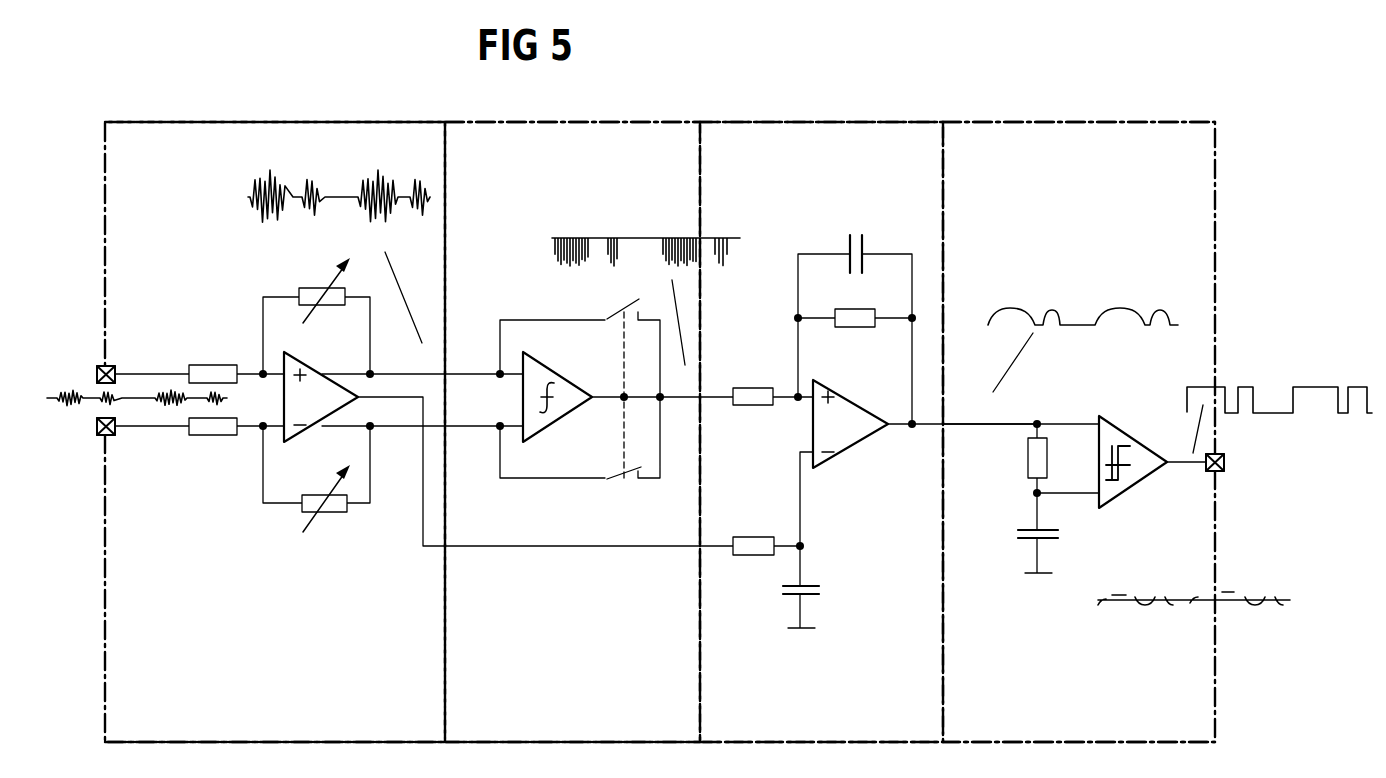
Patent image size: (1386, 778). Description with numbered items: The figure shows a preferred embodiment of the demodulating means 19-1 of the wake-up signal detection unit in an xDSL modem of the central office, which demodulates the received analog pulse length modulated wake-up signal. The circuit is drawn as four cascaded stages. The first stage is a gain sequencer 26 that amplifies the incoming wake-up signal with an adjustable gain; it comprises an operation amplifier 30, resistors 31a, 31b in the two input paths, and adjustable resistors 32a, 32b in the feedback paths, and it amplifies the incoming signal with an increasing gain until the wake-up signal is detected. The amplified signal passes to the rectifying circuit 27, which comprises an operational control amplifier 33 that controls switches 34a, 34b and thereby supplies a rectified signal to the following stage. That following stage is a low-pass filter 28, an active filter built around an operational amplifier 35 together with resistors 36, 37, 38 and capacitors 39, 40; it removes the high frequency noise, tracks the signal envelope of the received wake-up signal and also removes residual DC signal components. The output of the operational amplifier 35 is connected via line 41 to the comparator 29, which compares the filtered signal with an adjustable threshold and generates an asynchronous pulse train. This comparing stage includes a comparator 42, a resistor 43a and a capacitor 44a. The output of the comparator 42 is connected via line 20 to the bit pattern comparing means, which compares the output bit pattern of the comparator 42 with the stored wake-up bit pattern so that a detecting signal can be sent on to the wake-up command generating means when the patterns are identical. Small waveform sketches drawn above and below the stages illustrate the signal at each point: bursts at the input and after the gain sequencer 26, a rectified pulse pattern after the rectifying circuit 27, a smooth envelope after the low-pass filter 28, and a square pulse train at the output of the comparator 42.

The demodulating means 19-1 is at (880, 105).
The gain sequencer 26 is at (158, 722).
The rectifying circuit 27 is at (498, 721).
The low-pass filter 28 is at (747, 722).
The comparator 29 is at (990, 722).
The resistor 31a is at (210, 365).
The resistor 31b is at (218, 437).
The operation amplifier 30 is at (323, 377).
The adjustable resistor 32a is at (308, 288).
The adjustable resistor 32b is at (333, 513).
The operational control amplifier 33 is at (520, 393).
The switch 34a is at (625, 308).
The switch 34b is at (627, 473).
The resistor 37 is at (753, 385).
The resistor 38 is at (748, 558).
The resistor 36 is at (868, 330).
The capacitor 39 is at (857, 233).
The capacitor 40 is at (822, 590).
The operational amplifier 35 is at (860, 445).
The line 41 is at (962, 422).
The resistor 43a is at (1025, 457).
The capacitor 44a is at (1013, 535).
The comparator 42 is at (1143, 482).
The line 20 is at (1187, 462).